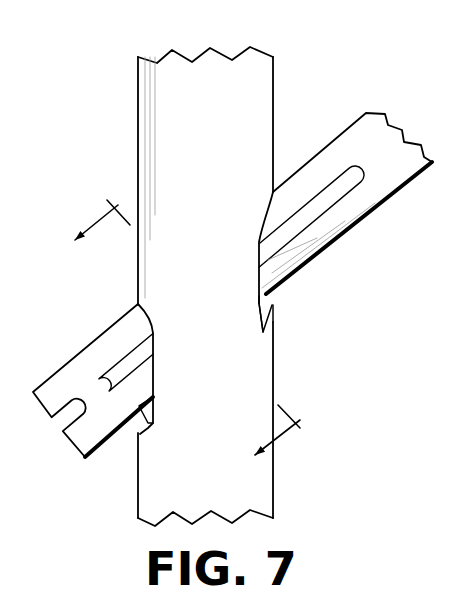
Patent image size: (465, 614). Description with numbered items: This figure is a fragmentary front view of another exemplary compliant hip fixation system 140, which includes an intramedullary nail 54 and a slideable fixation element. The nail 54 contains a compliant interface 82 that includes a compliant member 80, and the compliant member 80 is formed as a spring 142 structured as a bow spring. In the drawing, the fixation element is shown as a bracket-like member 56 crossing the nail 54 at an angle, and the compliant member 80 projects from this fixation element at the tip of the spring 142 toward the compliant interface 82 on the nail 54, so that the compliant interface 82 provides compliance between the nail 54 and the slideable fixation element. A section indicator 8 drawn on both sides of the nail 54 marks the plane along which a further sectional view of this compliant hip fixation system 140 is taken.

The hip fixation system 140 is at (232, 276).
The nail 54 is at (125, 160).
The bracket 56 is at (308, 220).
The compliant member 80 is at (290, 313).
The compliant interface 82 is at (290, 340).
The spring 142 is at (258, 313).
The section line 8- 8 is at (195, 316).